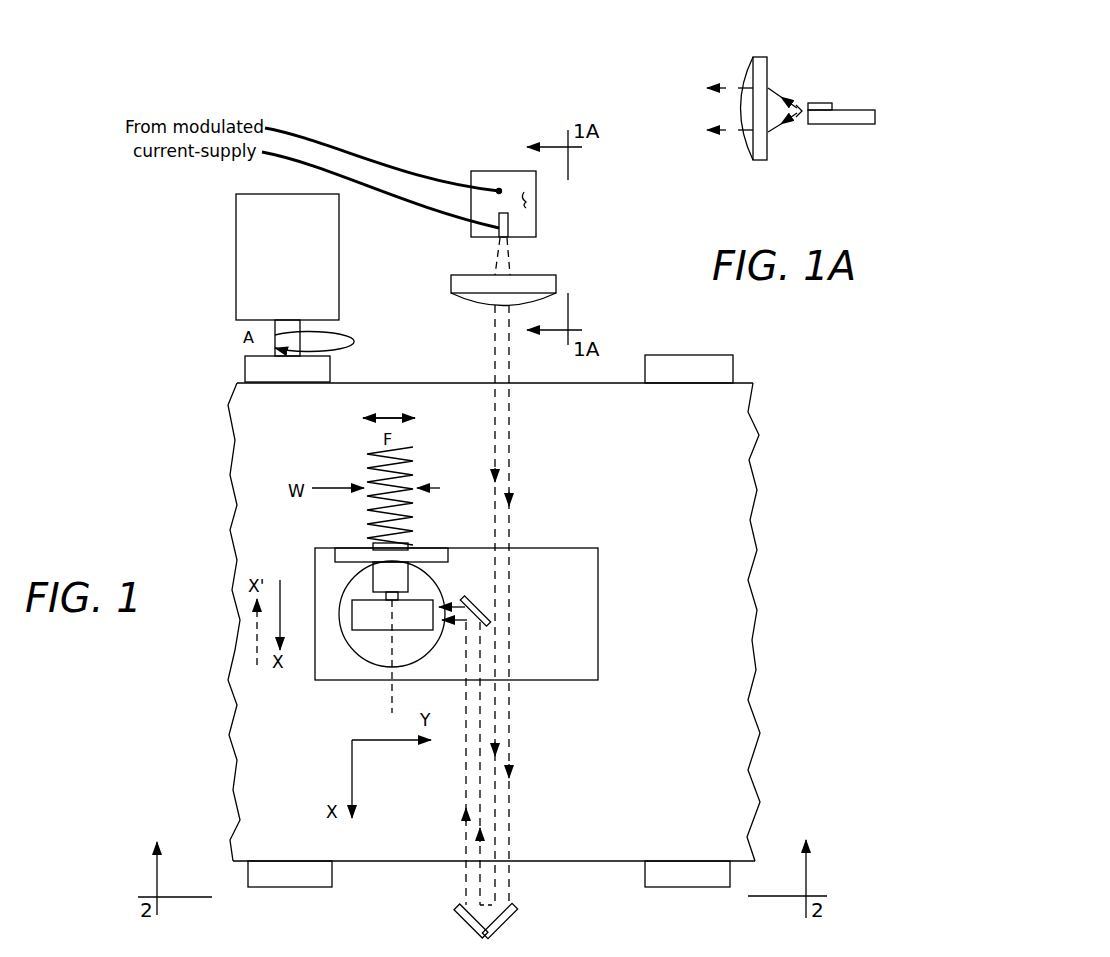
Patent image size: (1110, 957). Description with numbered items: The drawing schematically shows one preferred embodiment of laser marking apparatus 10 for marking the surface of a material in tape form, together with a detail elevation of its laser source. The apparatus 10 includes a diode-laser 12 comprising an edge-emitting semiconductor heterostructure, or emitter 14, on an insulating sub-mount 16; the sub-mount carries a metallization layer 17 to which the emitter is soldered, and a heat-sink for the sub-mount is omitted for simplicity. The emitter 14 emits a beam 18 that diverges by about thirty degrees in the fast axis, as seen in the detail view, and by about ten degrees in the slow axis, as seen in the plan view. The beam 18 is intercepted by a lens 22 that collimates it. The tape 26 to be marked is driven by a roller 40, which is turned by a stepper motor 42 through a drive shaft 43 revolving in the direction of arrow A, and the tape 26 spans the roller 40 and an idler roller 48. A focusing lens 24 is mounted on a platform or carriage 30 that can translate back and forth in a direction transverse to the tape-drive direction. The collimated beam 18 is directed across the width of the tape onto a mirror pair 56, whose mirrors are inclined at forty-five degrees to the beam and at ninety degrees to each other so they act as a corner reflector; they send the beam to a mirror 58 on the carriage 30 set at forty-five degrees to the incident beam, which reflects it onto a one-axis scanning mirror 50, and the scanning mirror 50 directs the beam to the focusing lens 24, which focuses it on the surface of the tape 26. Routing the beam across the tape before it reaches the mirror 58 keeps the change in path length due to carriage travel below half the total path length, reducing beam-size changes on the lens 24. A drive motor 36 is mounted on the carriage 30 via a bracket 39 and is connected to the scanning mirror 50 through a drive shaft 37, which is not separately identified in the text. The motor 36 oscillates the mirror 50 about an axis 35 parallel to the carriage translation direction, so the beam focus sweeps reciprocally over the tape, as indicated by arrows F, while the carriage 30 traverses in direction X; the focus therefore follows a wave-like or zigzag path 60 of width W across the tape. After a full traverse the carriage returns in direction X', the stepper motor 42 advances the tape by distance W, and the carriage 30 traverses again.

In FIG. 1, the laser marking apparatus 10 is at (148, 380).
In FIG. 1, the diode-laser 12 is at (438, 161).
In FIG. 1A, the diode-laser 12 is at (836, 150).
In FIG. 1, the edge-emitting semiconductor heterostructure (emitter) 14 is at (510, 225).
In FIG. 1A, the edge-emitting semiconductor heterostructure (emitter) 14 is at (820, 103).
In FIG. 1A, the insulating sub-mount 16 is at (858, 120).
In FIG. 1, the metallization layer 17 is at (527, 199).
In FIG. 1A, the metallization layer 17 is at (852, 112).
In FIG. 1, the beam 18 is at (490, 256).
In FIG. 1A, the beam 18 is at (785, 142).
In FIG. 1, the lens 22 is at (530, 296).
In FIG. 1A, the lens 22 is at (754, 108).
In FIG. 1, the focusing lens 24 is at (385, 663).
In FIG. 1, the tape 26 is at (690, 630).
In FIG. 1, the carriage 30 is at (604, 653).
In FIG. 1, the axis 35 is at (385, 705).
In FIG. 1, the drive motor 36 is at (383, 578).
In FIG. 1, the pivot 37 is at (373, 594).
In FIG. 1, the bracket 39 is at (343, 552).
In FIG. 1, the roller 40 is at (252, 366).
In FIG. 1, the stepper motor 42 is at (252, 257).
In FIG. 1, the drive shaft 43 is at (287, 328).
In FIG. 1, the idler roller 48 is at (720, 358).
In FIG. 1, the one-axis scanning mirror 50 is at (393, 625).
In FIG. 1, the mirror pair 56 is at (520, 928).
In FIG. 1, the mirror 58 is at (470, 598).
In FIG. 1, the zigzag path 60 is at (356, 462).